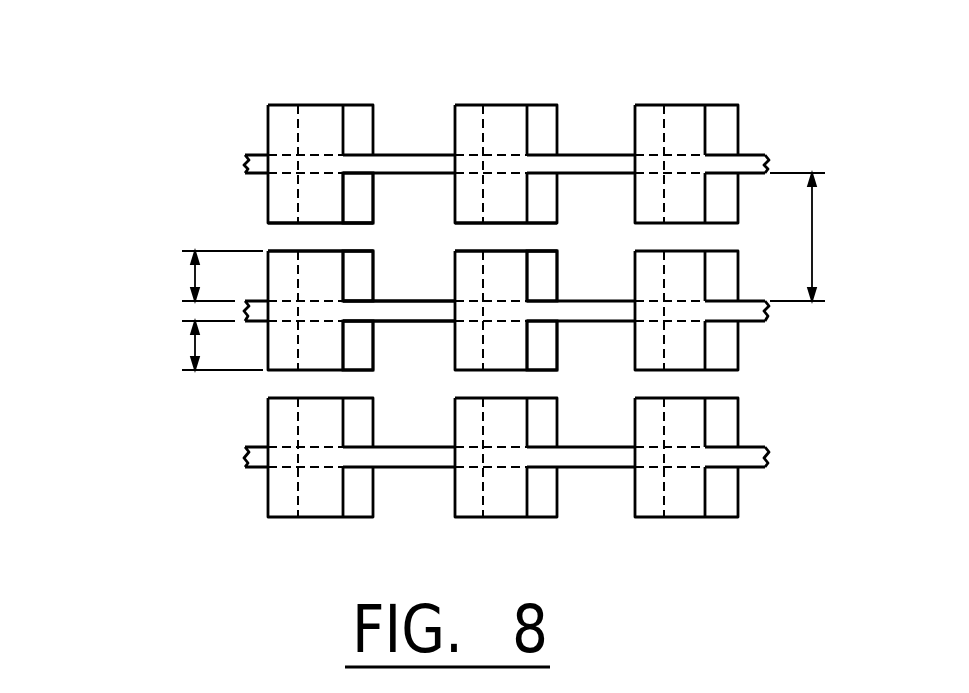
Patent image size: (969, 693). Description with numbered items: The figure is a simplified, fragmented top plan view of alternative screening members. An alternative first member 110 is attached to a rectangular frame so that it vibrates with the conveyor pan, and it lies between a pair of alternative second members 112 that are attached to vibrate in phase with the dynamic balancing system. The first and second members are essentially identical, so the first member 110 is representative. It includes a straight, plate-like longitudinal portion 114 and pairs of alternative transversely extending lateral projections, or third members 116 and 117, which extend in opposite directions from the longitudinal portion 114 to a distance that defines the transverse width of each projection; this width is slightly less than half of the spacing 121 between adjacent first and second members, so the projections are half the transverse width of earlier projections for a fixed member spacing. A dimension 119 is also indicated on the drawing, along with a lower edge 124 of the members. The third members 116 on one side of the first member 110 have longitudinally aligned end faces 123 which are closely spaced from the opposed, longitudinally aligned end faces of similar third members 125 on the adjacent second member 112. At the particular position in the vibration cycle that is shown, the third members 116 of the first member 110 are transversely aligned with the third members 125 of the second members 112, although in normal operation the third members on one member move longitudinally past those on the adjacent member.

The first member 110 is at (190, 310).
The second members 112 is at (248, 135).
The longitudinal portion 114 is at (398, 310).
The third members 116 is at (362, 275).
The third members 117 is at (363, 358).
The half-width dimension 119 is at (192, 280).
The spacing 121 is at (813, 242).
The end faces 123 is at (358, 239).
The lower edge 124 is at (310, 227).
The third members 125 is at (360, 218).